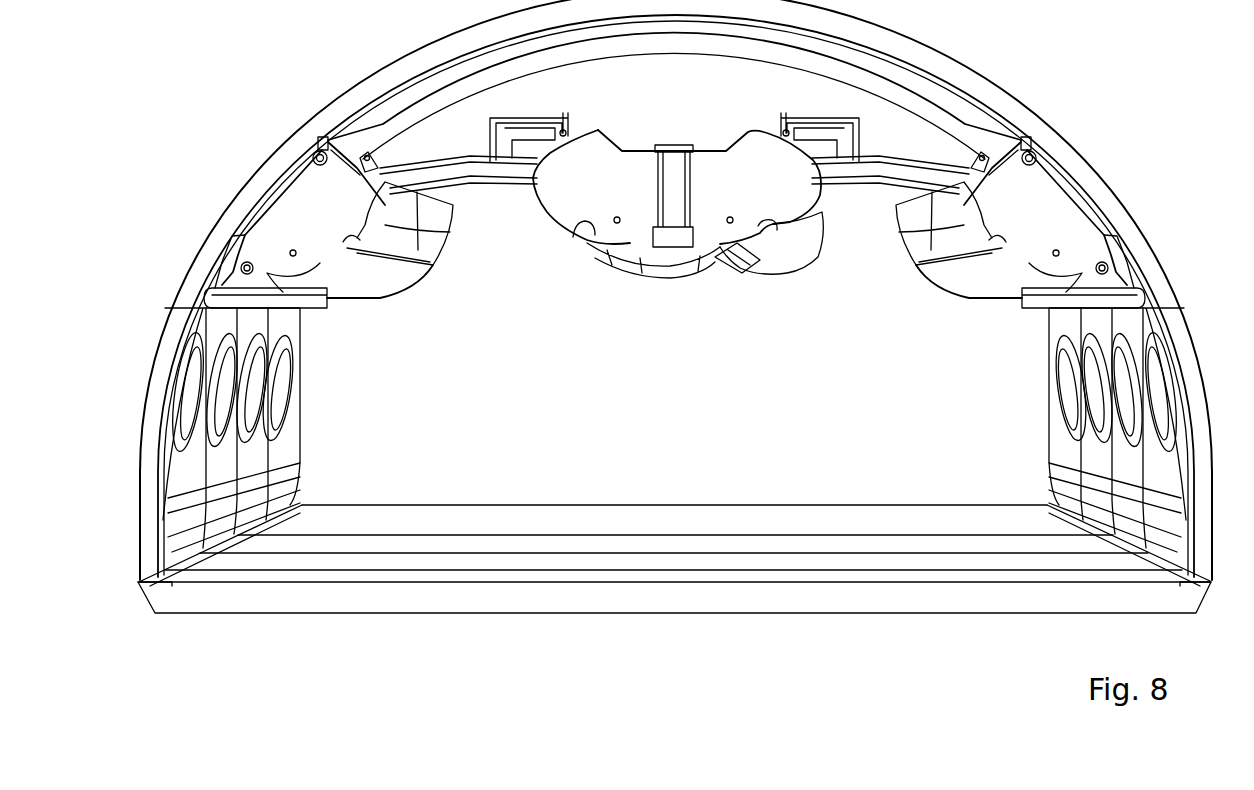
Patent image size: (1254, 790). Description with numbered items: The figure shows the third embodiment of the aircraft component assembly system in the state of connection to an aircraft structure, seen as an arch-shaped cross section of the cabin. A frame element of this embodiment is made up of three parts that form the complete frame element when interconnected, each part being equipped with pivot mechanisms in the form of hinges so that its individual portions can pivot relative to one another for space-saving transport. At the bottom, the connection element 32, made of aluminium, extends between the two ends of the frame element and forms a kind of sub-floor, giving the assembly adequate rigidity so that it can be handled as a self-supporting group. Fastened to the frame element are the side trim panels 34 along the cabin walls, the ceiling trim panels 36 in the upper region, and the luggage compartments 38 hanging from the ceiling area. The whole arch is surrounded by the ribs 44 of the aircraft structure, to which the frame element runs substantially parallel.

The ribs 44 is at (998, 93).
The luggage compartments 38 is at (608, 150).
The ceiling trim panels 36 is at (500, 186).
The side trim panels 34 is at (290, 448).
The connection element 32 is at (615, 565).